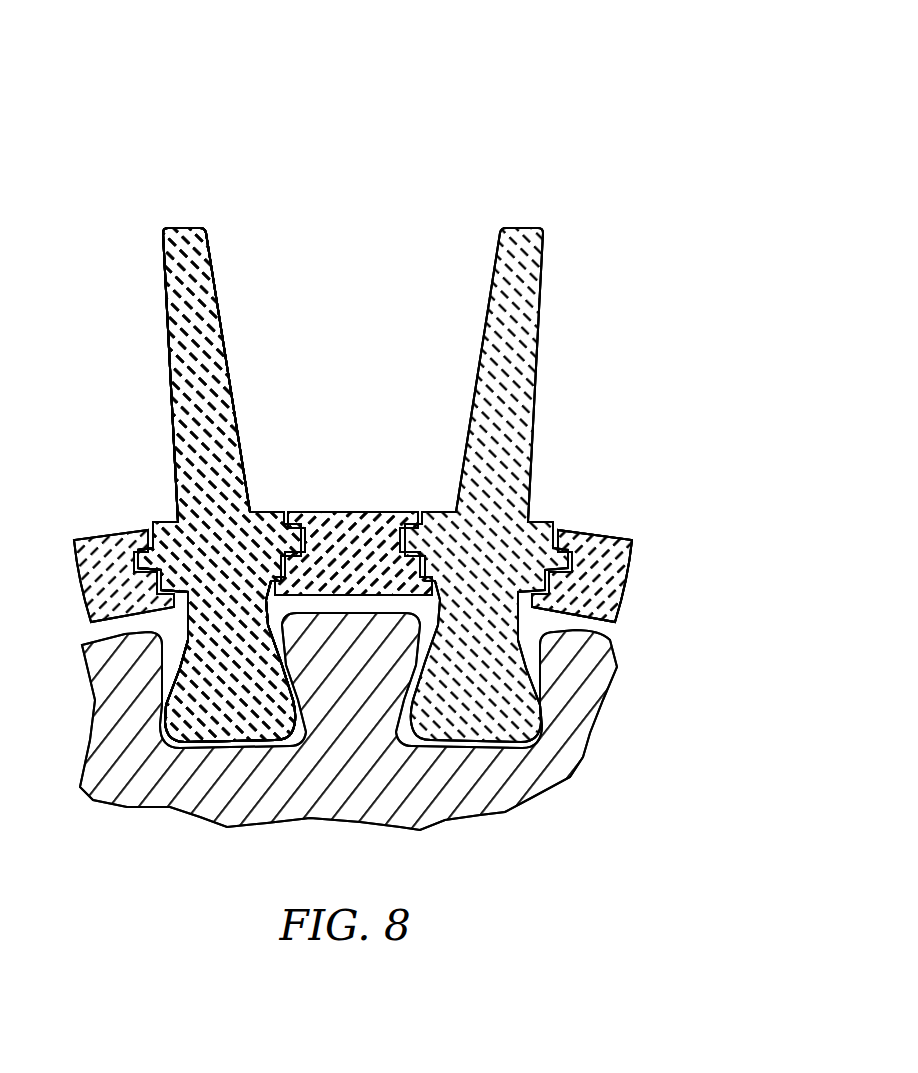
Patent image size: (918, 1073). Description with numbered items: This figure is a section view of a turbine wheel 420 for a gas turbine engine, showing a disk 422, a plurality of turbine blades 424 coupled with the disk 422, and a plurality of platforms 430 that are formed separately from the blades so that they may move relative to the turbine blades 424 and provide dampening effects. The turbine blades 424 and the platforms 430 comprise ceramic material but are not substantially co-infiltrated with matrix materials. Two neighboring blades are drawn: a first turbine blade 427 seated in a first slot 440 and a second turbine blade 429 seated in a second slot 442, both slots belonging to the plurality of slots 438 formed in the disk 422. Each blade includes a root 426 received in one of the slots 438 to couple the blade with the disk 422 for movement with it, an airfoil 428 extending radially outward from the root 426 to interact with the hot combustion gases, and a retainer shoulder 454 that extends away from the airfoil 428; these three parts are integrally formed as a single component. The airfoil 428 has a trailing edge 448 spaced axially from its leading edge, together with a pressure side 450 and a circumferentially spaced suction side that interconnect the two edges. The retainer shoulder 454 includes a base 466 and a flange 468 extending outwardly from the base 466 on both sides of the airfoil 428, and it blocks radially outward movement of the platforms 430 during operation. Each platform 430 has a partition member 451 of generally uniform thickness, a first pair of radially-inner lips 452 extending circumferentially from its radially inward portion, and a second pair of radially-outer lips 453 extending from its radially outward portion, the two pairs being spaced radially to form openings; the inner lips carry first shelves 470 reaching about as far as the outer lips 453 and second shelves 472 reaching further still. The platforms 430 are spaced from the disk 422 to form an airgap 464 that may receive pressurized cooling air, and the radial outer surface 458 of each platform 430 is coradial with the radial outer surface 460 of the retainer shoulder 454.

The turbine wheel 420 is at (615, 150).
The disk 422 is at (118, 772).
The turbine blades 424 is at (157, 282).
The root 426 is at (190, 722).
The first turbine blade 427 is at (221, 260).
The airfoil 428 is at (172, 372).
The second turbine blade 429 is at (490, 261).
The platforms 430 is at (322, 500).
The slots 438 is at (211, 755).
The first slot 440 is at (280, 745).
The second slot 442 is at (460, 745).
The trailing edge 448 is at (215, 322).
The pressure side 450 is at (240, 442).
The partition member 451 is at (357, 520).
The radially-inner lips 452 is at (180, 460).
The radially-outer lips 453 is at (407, 500).
The retainer shoulder 454 is at (268, 501).
The radial outer surface of platform 458 is at (80, 540).
The radial outer surface of retainer shoulder 460 is at (148, 526).
The airgap 464 is at (602, 633).
The base 466 is at (535, 603).
The flange 468 is at (572, 545).
The first shelves 470 is at (301, 610).
The second shelves 472 is at (282, 601).